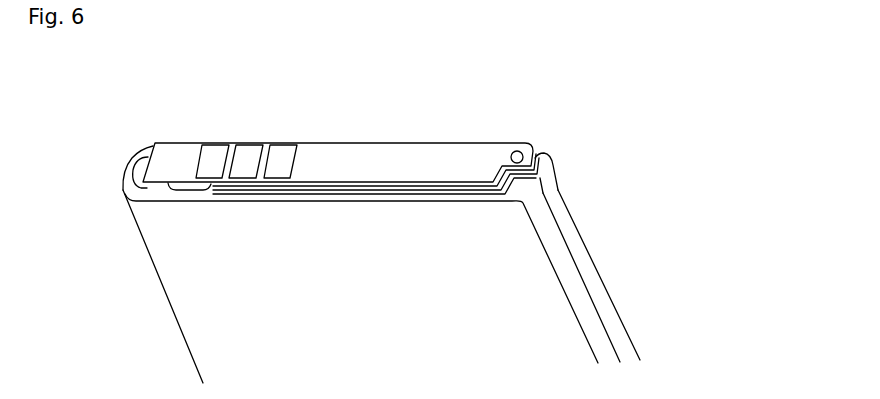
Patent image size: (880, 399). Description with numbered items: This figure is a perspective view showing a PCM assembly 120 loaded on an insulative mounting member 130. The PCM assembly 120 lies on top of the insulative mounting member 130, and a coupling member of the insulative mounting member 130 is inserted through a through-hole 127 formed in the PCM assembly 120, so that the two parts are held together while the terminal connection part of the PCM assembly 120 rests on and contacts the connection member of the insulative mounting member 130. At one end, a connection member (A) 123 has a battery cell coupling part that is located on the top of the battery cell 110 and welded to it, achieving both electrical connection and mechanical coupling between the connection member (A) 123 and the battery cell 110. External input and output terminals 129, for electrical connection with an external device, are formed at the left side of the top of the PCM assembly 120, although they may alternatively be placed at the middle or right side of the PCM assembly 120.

The battery cell 110 is at (620, 291).
The PCM assembly 120 is at (393, 146).
The connection member (A) 123 is at (140, 162).
The through-hole 127 is at (517, 151).
The external input and output terminals 129 is at (213, 152).
The insulative mounting member 130 is at (548, 173).